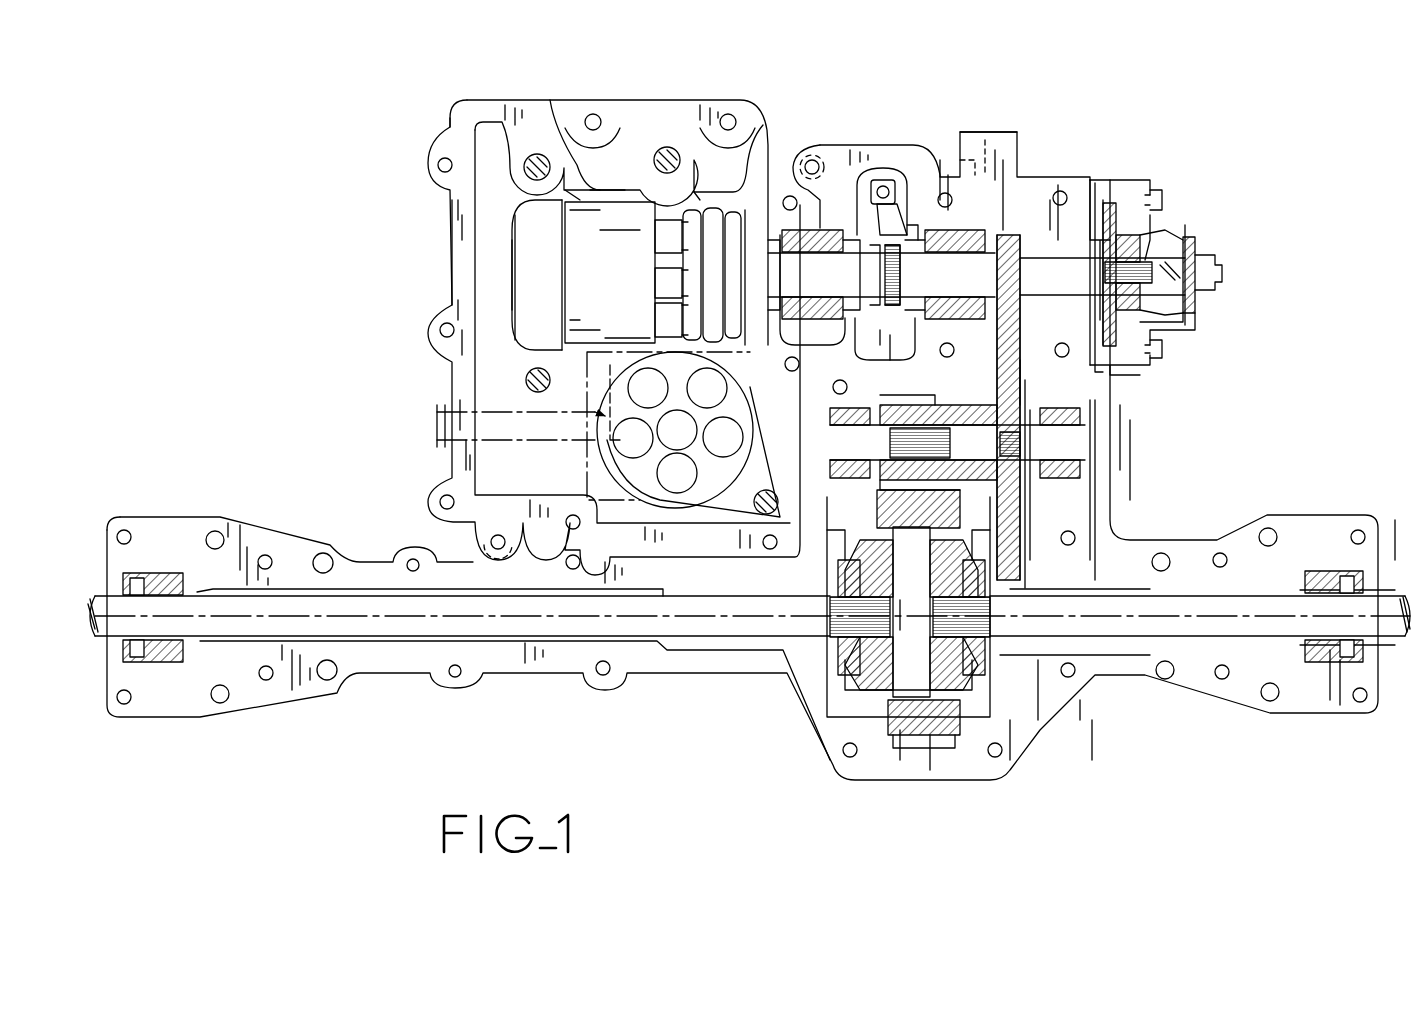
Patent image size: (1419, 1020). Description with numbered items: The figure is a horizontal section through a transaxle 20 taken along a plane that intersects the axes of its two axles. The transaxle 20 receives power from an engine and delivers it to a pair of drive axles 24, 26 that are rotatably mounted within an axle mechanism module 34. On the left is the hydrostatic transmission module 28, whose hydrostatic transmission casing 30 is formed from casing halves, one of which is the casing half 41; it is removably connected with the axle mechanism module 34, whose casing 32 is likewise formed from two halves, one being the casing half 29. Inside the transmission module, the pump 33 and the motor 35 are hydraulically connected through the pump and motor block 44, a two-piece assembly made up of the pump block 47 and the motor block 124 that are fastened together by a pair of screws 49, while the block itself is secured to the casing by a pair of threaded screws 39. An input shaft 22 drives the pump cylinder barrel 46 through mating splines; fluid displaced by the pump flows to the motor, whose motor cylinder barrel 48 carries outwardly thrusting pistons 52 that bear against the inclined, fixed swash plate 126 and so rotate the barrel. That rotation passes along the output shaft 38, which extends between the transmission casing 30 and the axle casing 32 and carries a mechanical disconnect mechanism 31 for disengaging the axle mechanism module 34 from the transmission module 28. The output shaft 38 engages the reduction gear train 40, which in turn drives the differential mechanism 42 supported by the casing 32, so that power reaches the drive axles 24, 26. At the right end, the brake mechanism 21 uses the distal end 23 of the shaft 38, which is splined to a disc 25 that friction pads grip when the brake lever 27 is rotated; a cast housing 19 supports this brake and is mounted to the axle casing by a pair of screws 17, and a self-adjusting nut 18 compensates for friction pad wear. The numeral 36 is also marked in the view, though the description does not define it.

The screws 17 is at (1155, 192).
The self-adjusting nut 18 is at (1210, 262).
The cast housing 19 is at (1160, 362).
The transaxle 20 is at (658, 697).
The brake mechanism 21 is at (1192, 225).
The input shaft 22 is at (675, 430).
The distal end 23 is at (1140, 252).
The drive axle 24 is at (190, 625).
The disc 25 is at (1113, 210).
The drive axle 26 is at (1298, 628).
The brake lever 27 is at (1197, 313).
The hydrostatic transmission module 28 is at (716, 86).
The casing half 29 is at (1100, 470).
The hydrostatic transmission casing 30 is at (517, 100).
The mechanical disconnect mechanism 31 is at (917, 215).
The casing 32 is at (1063, 175).
The pump 33 is at (440, 412).
The axle mechanism module 34 is at (975, 115).
The motor 35 is at (513, 270).
The cover plate 36 is at (605, 182).
The output shaft 38 is at (782, 250).
The threaded screws 39 is at (668, 150).
The reduction gear train 40 is at (1050, 397).
The casing half 41 is at (446, 214).
The differential mechanism 42 is at (1000, 650).
The pump and motor block 44 is at (688, 195).
The pump cylinder barrel 46 is at (630, 470).
The pump block 47 is at (580, 192).
The motor cylinder barrel 48 is at (630, 210).
The screws 49 is at (530, 160).
The pistons 52 is at (665, 232).
The motor block 124 is at (530, 205).
The swash plate 126 is at (725, 220).